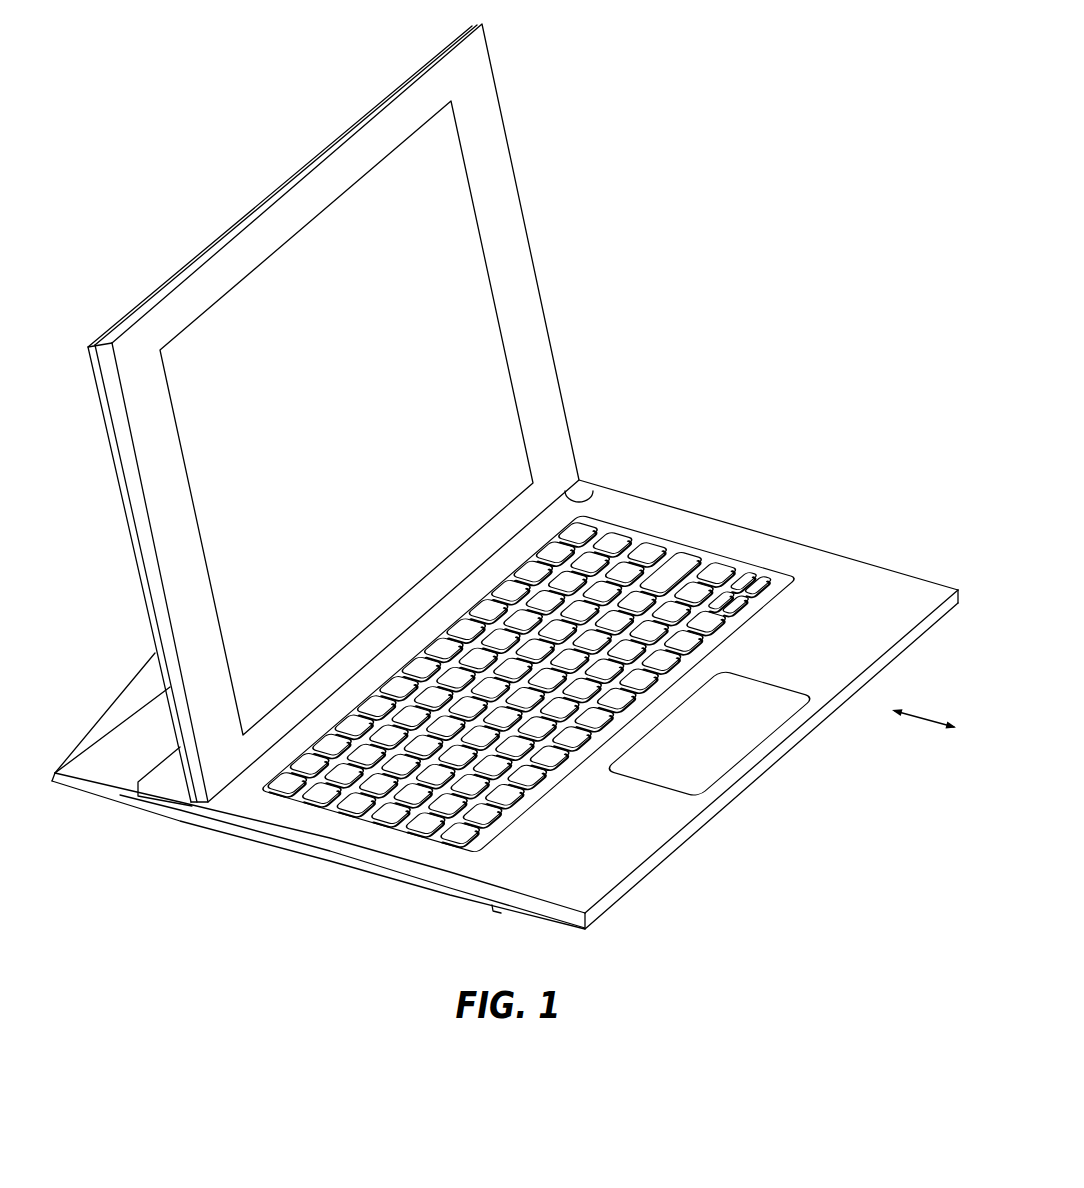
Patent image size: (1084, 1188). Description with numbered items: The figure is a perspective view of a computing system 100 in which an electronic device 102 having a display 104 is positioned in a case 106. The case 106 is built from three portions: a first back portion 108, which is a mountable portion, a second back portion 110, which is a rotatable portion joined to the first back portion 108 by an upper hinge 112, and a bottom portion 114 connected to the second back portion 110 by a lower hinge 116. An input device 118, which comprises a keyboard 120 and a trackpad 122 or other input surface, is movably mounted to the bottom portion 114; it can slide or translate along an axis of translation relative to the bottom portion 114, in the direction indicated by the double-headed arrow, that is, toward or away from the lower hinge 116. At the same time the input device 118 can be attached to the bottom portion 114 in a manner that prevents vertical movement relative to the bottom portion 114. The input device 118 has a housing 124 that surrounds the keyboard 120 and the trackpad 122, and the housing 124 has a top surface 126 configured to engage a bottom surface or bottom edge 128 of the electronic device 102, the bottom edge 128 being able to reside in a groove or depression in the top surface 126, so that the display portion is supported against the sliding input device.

The computing system 100 is at (693, 156).
The electronic device 102 is at (507, 137).
The display 104 is at (352, 397).
The case 106 is at (76, 730).
The first back portion 108 is at (98, 398).
The second back portion 110 is at (108, 703).
The upper hinge 112 is at (148, 653).
The bottom portion 114 is at (97, 798).
The lower hinge 116 is at (54, 788).
The input device 118 is at (888, 598).
The keyboard 120 is at (674, 562).
The trackpad 122 is at (738, 737).
The housing 124 is at (927, 580).
The top surface 126 is at (842, 582).
The bottom edge 128 is at (597, 495).